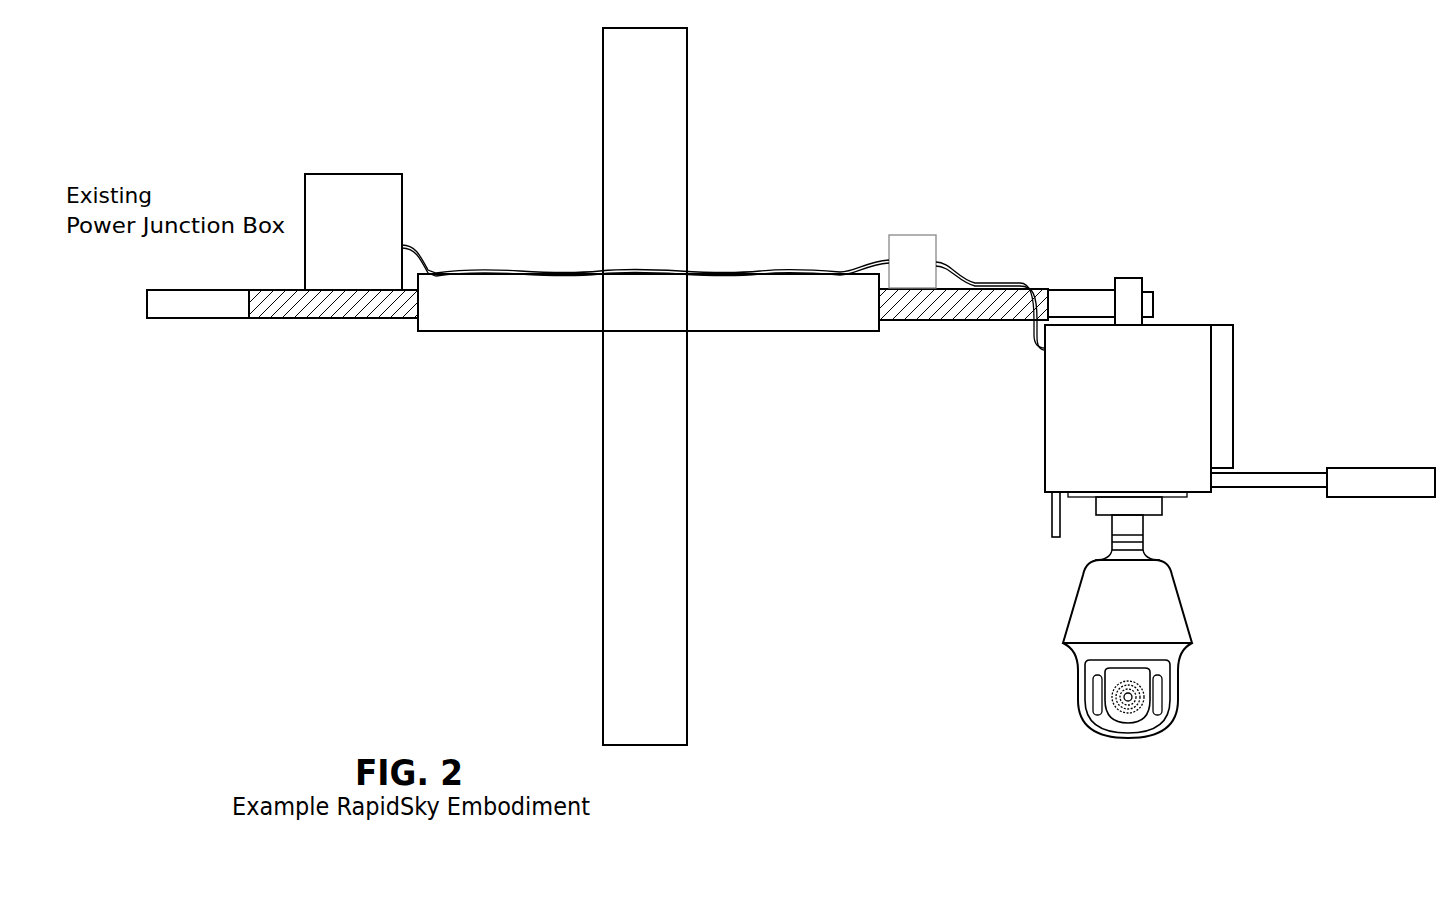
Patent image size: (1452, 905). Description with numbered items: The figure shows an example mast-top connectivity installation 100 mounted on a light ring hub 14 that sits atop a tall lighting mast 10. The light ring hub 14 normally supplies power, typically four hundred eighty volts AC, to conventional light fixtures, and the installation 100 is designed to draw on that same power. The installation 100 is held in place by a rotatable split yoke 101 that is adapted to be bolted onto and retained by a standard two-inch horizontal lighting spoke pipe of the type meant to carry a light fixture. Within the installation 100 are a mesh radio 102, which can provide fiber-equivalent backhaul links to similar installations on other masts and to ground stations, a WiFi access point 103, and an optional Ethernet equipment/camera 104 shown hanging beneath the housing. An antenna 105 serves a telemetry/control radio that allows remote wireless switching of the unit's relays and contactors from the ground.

The mast 10 is at (660, 618).
The light ring hub 14 is at (648, 302).
The connectivity installation 100 is at (1013, 436).
The rotatable split yoke 101 is at (1142, 258).
The mesh radio 102 is at (1255, 348).
The WiFi access point 103 is at (1363, 440).
The Ethernet equipment/camera 104 is at (1195, 517).
The antenna 105 is at (1027, 518).